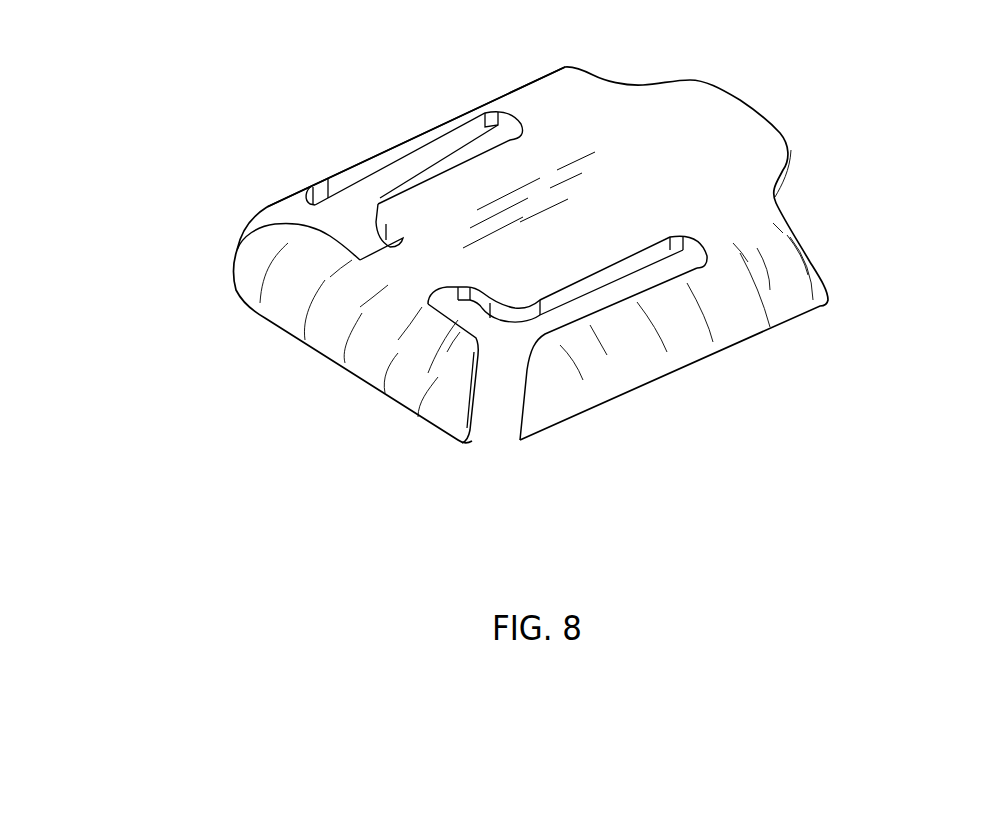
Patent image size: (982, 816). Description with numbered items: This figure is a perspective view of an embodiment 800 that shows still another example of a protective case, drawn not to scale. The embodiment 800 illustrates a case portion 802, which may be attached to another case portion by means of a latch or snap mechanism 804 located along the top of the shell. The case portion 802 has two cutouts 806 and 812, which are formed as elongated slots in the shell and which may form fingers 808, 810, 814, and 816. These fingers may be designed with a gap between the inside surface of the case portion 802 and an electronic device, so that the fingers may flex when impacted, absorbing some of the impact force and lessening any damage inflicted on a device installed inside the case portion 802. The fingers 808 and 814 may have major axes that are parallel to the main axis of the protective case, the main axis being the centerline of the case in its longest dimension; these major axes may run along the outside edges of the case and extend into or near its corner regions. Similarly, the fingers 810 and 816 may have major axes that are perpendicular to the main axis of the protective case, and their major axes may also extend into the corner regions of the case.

The embodiment 800 is at (280, 432).
The case portion 802 is at (785, 297).
The latch or snap mechanism 804 is at (757, 122).
The cutout 806 is at (620, 291).
The finger 808 is at (592, 400).
The finger 810 is at (452, 407).
The cutout 812 is at (427, 167).
The finger 814 is at (340, 180).
The finger 816 is at (256, 282).